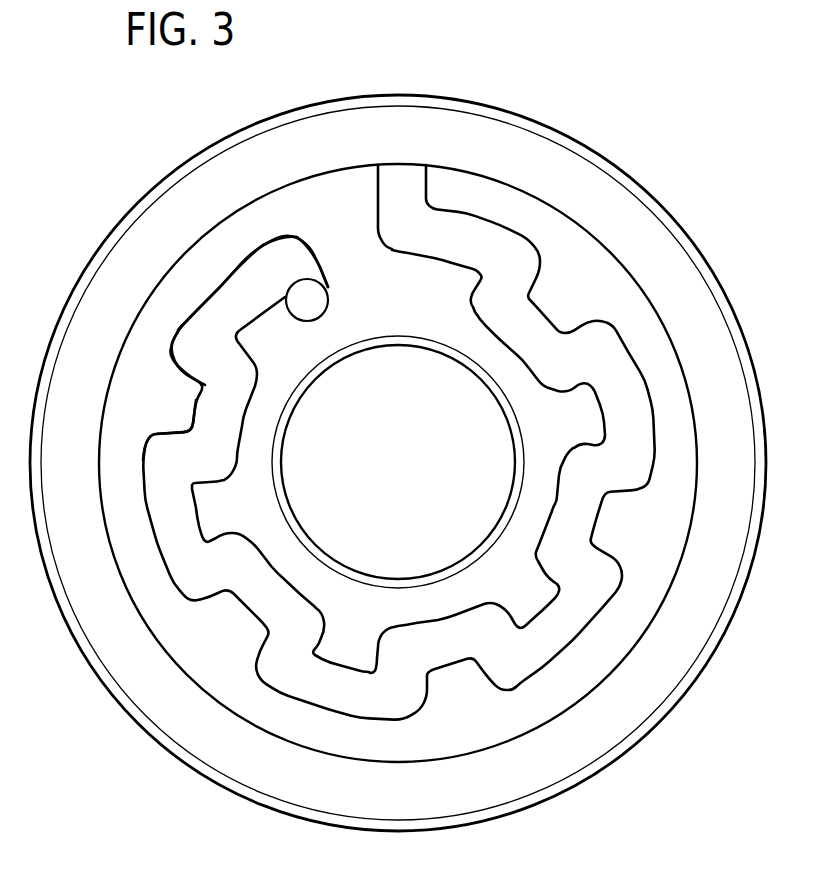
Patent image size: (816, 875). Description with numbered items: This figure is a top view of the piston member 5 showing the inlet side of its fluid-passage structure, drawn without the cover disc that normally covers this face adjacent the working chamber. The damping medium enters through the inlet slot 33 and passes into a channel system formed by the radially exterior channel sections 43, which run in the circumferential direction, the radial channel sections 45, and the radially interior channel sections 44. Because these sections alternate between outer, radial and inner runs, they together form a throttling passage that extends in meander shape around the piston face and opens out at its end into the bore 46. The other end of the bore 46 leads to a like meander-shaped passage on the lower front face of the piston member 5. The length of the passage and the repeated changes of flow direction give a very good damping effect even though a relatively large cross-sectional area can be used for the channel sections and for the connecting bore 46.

The piston member 5 is at (336, 188).
The inlet slot 33 is at (413, 173).
The radially exterior channel sections 43 is at (240, 277).
The radially interior channel sections 44 is at (215, 412).
The radial channel sections 45 is at (205, 353).
The bore 46 is at (315, 297).